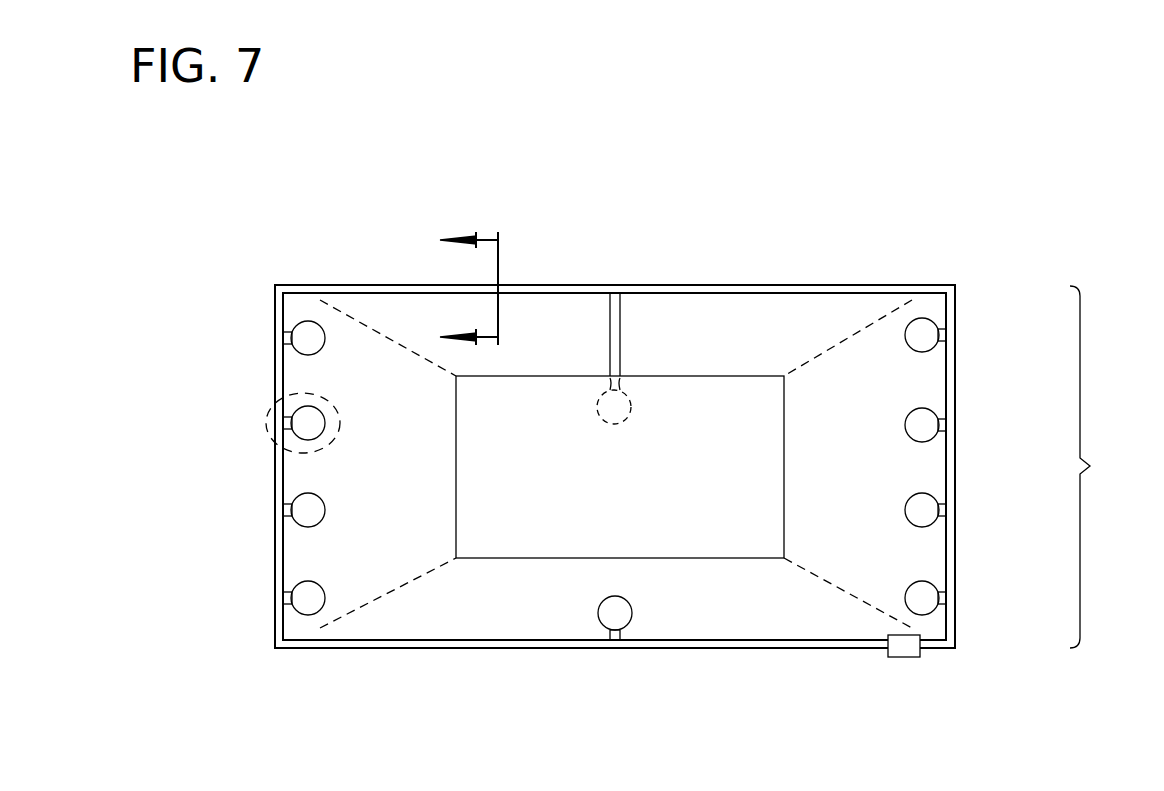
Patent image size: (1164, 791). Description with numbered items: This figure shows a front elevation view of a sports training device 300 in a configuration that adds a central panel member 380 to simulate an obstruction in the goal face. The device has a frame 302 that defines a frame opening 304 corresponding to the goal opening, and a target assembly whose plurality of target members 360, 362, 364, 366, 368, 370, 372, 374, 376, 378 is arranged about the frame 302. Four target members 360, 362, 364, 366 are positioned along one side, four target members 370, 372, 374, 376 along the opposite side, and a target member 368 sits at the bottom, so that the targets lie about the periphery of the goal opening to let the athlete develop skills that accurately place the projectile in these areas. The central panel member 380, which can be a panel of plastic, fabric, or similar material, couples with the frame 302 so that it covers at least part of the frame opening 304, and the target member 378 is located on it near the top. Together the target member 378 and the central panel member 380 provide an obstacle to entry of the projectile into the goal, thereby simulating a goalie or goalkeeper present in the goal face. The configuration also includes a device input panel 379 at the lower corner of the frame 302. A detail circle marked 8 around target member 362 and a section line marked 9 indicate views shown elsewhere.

The sports training device 300 is at (982, 185).
The frame 302 is at (1112, 467).
The frame opening 304 is at (744, 608).
The target member 360 is at (266, 337).
The target member 362 is at (260, 424).
The target member 364 is at (264, 512).
The target member 366 is at (266, 598).
The target member 368 is at (608, 662).
The target member 370 is at (965, 599).
The target member 372 is at (964, 510).
The target member 374 is at (966, 425).
The target member 376 is at (966, 333).
The target member 378 is at (648, 402).
The device input panel 379 is at (905, 657).
The central panel member 380 is at (810, 404).
The detail view indicator 8 is at (272, 441).
The section line 9 is at (458, 288).